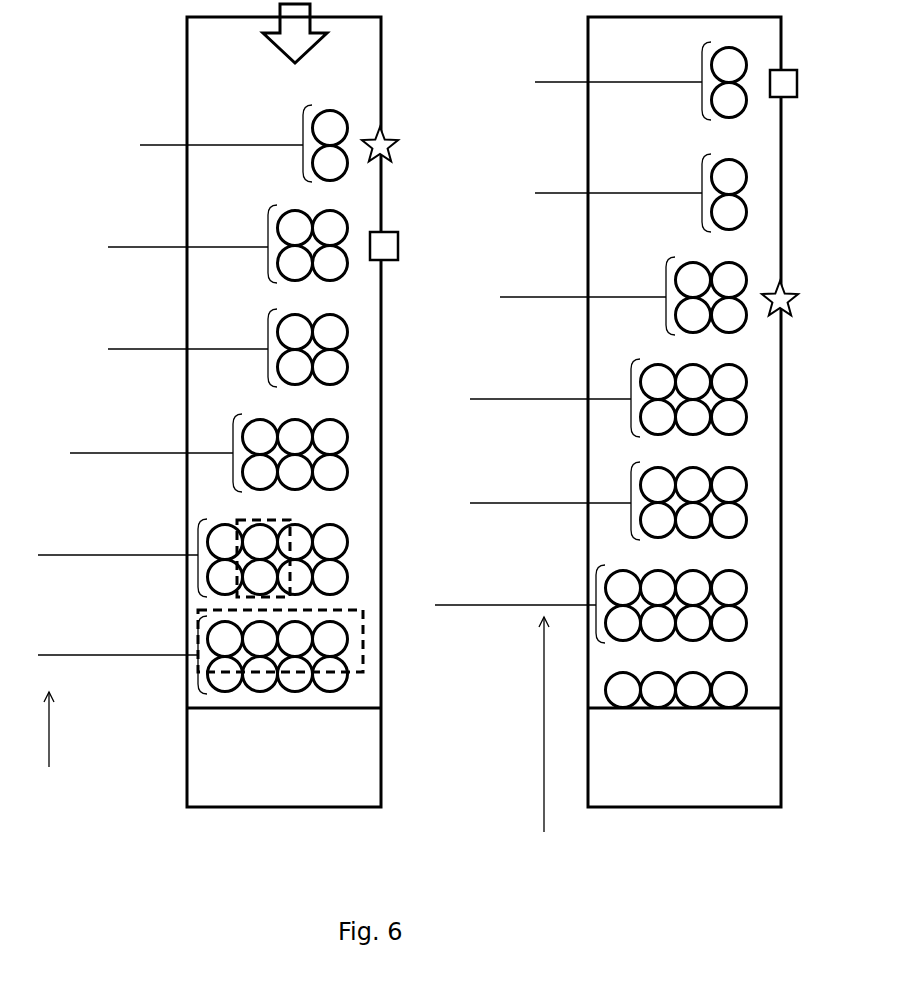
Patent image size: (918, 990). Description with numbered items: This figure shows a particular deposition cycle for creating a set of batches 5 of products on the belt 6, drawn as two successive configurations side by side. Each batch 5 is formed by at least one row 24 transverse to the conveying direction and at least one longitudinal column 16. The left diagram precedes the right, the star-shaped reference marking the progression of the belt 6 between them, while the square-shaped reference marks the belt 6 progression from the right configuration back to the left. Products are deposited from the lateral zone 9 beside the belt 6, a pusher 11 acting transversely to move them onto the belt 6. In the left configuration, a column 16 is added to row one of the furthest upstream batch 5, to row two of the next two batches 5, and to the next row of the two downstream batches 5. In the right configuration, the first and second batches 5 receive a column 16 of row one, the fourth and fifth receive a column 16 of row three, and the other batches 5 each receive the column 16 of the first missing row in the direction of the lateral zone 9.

The batch 5 is at (756, 588).
The belt 6 is at (210, 772).
The lateral zone 9 is at (50, 747).
The pusher 11 is at (543, 741).
The column 16 is at (225, 498).
The row 24 is at (360, 678).